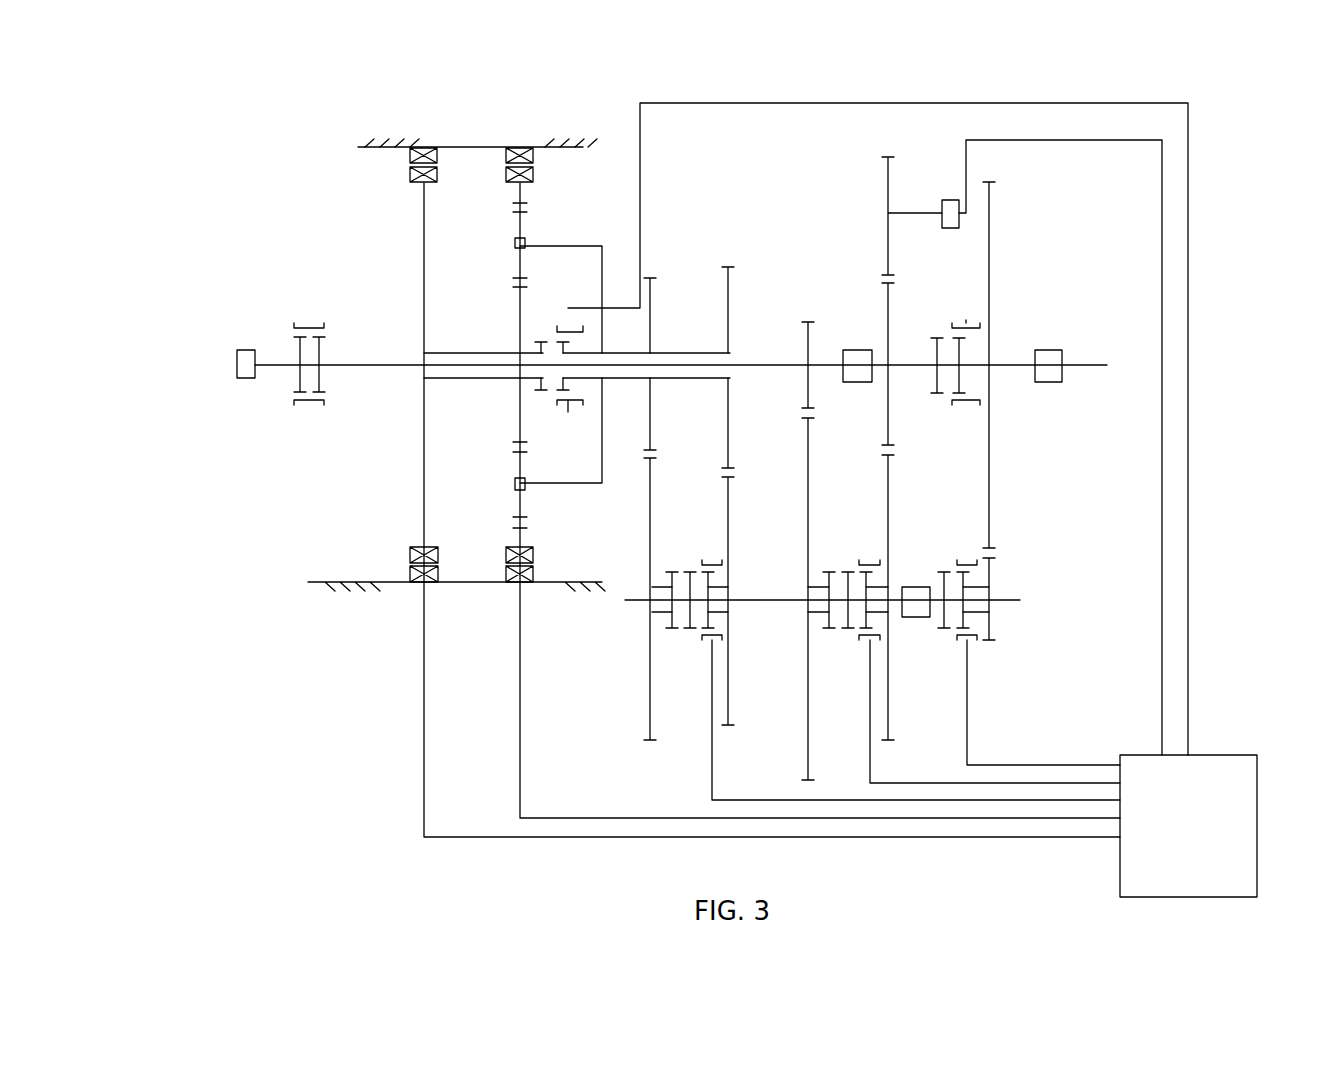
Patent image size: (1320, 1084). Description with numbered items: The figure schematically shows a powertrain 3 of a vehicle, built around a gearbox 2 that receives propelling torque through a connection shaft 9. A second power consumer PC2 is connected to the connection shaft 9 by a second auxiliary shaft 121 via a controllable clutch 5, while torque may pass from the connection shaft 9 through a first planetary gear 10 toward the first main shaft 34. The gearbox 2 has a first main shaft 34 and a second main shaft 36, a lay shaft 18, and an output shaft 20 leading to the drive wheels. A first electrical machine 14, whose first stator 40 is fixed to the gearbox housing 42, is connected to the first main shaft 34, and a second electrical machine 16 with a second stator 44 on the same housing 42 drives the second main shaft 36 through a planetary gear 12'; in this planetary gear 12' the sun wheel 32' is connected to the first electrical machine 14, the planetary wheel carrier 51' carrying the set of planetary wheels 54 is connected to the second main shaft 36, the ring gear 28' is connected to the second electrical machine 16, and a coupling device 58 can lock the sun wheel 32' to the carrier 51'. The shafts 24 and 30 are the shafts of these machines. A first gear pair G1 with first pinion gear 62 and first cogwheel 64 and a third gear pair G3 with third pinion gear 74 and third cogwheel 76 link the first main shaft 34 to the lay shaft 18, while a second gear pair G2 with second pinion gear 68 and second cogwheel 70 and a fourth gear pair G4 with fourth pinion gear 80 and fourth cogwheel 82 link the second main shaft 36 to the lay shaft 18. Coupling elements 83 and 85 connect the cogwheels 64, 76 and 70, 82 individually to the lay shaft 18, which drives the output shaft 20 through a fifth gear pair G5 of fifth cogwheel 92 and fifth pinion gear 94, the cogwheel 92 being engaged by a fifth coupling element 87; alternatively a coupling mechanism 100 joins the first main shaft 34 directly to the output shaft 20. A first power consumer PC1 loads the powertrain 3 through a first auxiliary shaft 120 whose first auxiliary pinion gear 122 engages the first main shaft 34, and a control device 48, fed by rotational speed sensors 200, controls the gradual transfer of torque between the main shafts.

The gearbox 2 is at (201, 707).
The powertrain 3 is at (355, 795).
The controllable clutch 5 is at (306, 326).
The connection shaft 9 is at (357, 367).
The first planetary gear 10 is at (335, 484).
The planetary gear 12' is at (854, 429).
The first electrical machine 14 is at (395, 609).
The second electrical machine 16 is at (540, 601).
The lay shaft 18 is at (782, 604).
The output shaft 20 is at (1018, 365).
The first electric machine shaft 24 is at (437, 172).
The ring gear 28' is at (563, 217).
The second electric machine shaft 30 is at (505, 176).
The sun wheel 32' is at (553, 324).
The first main shaft 34 is at (760, 352).
The second main shaft 36 is at (638, 380).
The first stator 40 is at (408, 157).
The gearbox housing 42 is at (507, 153).
The second stator 44 is at (548, 150).
The control device 48 is at (1188, 826).
The planetary wheel carrier 51' is at (550, 499).
The second set of planetary wheels 54 is at (524, 270).
The second coupling device 58 is at (568, 412).
The first pinion gear 62 is at (888, 396).
The first cogwheel 64 is at (888, 516).
The second pinion gear 68 is at (730, 400).
The second cogwheel 70 is at (730, 510).
The third pinion gear 74 is at (810, 400).
The third cogwheel 76 is at (810, 465).
The fourth pinion gear 80 is at (652, 400).
The fourth cogwheel 82 is at (653, 538).
The third coupling element 83 is at (868, 566).
The fourth coupling element 85 is at (712, 568).
The fifth coupling element 87 is at (962, 566).
The fifth cogwheel 92 is at (994, 570).
The fifth pinion gear 94 is at (992, 466).
The coupling mechanism 100 is at (978, 403).
The first auxiliary shaft 120 is at (942, 208).
The second auxiliary shaft 121 is at (285, 367).
The first auxiliary pinion gear 122 is at (886, 161).
The rotational speed sensors 200 is at (857, 348).
The first gear pair G1 is at (917, 352).
The second gear pair G2 is at (751, 259).
The third gear pair G3 is at (835, 282).
The fourth gear pair G4 is at (681, 299).
The fifth gear pair G5 is at (1020, 448).
The first power consumer PC1 is at (962, 213).
The second power consumer PC2 is at (245, 348).